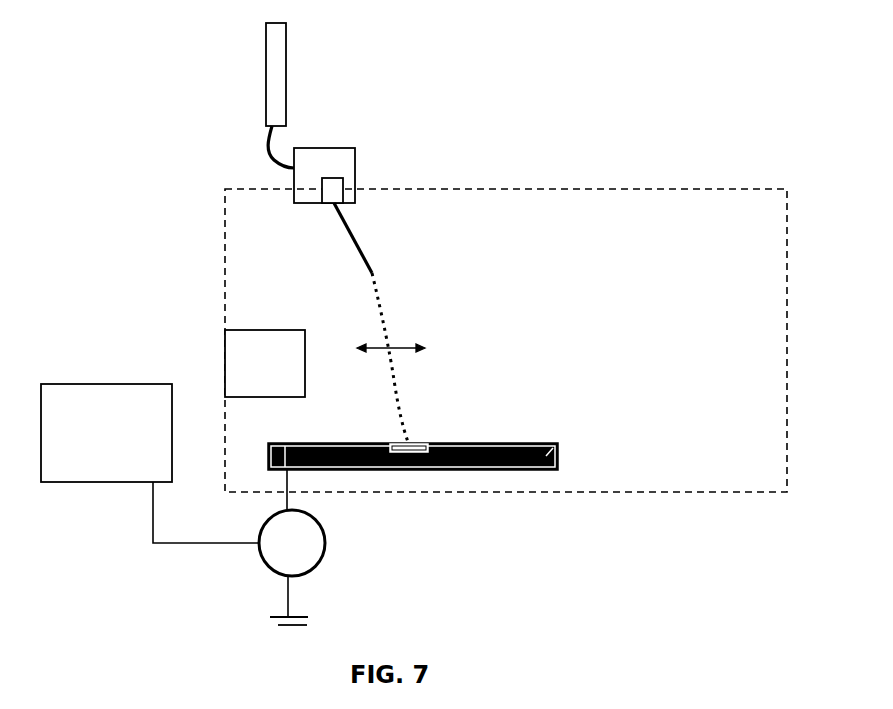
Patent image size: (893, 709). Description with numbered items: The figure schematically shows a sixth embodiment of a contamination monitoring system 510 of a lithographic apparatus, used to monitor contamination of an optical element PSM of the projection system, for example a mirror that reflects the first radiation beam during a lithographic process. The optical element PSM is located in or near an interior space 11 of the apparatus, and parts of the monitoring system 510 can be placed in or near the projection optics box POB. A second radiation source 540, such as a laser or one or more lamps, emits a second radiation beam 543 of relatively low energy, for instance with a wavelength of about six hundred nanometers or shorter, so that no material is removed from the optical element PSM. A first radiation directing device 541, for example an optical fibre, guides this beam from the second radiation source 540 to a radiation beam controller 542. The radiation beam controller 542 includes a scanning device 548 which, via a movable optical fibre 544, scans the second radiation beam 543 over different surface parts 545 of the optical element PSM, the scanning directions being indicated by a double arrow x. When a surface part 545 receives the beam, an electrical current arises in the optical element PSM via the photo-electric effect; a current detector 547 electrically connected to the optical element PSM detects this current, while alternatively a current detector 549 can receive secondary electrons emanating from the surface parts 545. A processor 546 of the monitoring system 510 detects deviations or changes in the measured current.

The monitoring system 510 is at (105, 352).
The interior space 11 is at (275, 281).
The second radiation source 540 is at (266, 97).
The first radiation directing device 541 is at (268, 152).
The radiation beam controller 542 is at (343, 160).
The second radiation beam 543 is at (385, 328).
The optical fibre 544 is at (357, 235).
The surface parts 545 is at (412, 440).
The processor 546 is at (149, 463).
The current detector 547 is at (268, 553).
The scanning device 548 is at (344, 183).
The current detector 549 is at (265, 363).
The projection optics box POB is at (628, 182).
The optical element PSM is at (547, 453).
The double arrow x is at (394, 362).